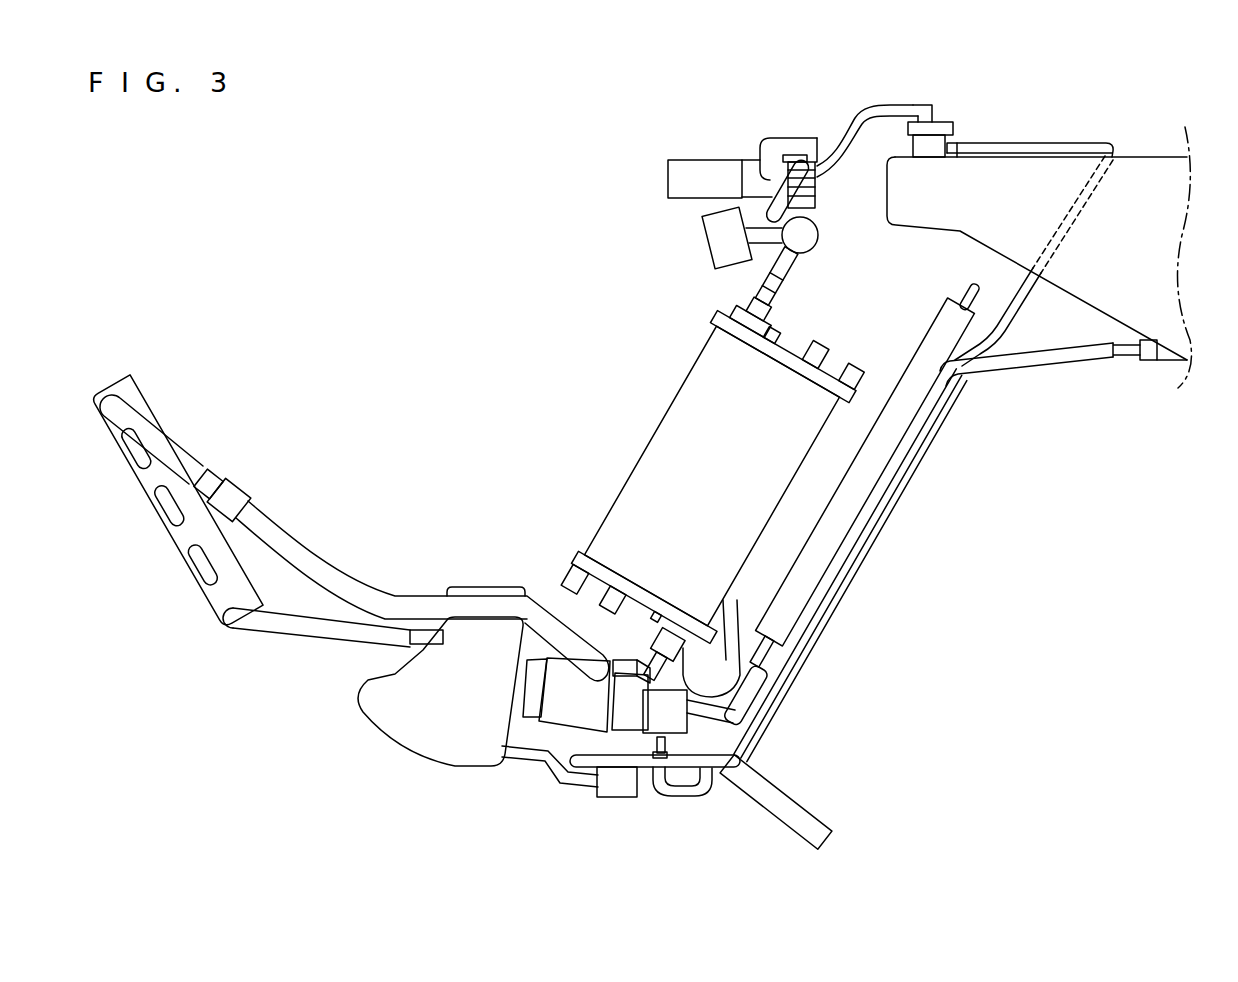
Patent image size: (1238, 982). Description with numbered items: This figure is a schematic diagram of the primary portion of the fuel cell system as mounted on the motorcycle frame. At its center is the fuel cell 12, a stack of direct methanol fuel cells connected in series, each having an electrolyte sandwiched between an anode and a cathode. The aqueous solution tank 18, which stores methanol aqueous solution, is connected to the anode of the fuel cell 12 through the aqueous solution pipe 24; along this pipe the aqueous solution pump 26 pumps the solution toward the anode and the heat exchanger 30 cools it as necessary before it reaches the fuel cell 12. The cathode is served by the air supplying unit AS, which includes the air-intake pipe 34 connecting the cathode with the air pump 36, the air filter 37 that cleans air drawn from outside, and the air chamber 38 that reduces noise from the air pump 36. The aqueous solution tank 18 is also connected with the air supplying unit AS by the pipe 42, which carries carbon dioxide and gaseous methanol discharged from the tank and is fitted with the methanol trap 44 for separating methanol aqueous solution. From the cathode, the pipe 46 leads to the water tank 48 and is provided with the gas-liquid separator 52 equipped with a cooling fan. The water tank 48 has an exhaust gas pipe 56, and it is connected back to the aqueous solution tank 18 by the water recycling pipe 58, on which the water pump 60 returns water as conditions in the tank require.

The fuel cell 12 is at (675, 432).
The aqueous solution tank 18 is at (1146, 168).
The aqueous solution pipe 24 is at (1034, 364).
The aqueous solution pump 26 is at (560, 717).
The heat exchanger 30 is at (932, 347).
The air-intake pipe 34 is at (793, 277).
The air pump 36 is at (792, 148).
The air filter 37 is at (712, 245).
The air chamber 38 is at (810, 238).
The pipe 42 is at (857, 137).
The methanol trap 44 is at (949, 118).
The pipe 46 is at (308, 627).
The water tank 48 is at (433, 743).
The gas-liquid separator 52 is at (182, 542).
The exhaust gas pipe 56 is at (773, 790).
The water recycling pipe 58 is at (912, 457).
The water pump 60 is at (620, 790).
The air supplying unit AS is at (743, 136).